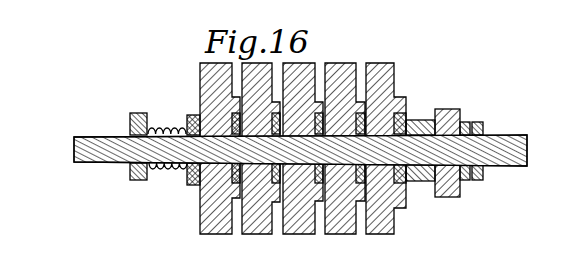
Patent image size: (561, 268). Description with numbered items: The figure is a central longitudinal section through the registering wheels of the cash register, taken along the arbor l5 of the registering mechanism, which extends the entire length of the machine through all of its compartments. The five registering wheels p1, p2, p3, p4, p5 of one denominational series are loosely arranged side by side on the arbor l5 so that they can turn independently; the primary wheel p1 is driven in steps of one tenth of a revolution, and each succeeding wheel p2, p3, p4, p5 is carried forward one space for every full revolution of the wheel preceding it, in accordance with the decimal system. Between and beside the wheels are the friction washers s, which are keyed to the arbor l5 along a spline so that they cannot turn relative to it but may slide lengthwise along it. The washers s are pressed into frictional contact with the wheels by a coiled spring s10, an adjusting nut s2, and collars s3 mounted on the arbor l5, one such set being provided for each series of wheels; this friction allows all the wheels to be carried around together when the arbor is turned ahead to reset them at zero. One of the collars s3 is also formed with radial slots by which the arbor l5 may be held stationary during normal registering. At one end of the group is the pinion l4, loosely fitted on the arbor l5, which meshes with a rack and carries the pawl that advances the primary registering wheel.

The pulley p1 is at (386, 157).
The pulley p2 is at (345, 157).
The pulley p3 is at (303, 157).
The pulley p4 is at (261, 157).
The pulley p5 is at (220, 157).
The friction washer s is at (233, 122).
The adjusting nut s2 is at (136, 115).
The collar s3 is at (478, 179).
The spring s10 is at (167, 166).
The pinion l4 is at (445, 109).
The arbor l5 is at (300, 150).